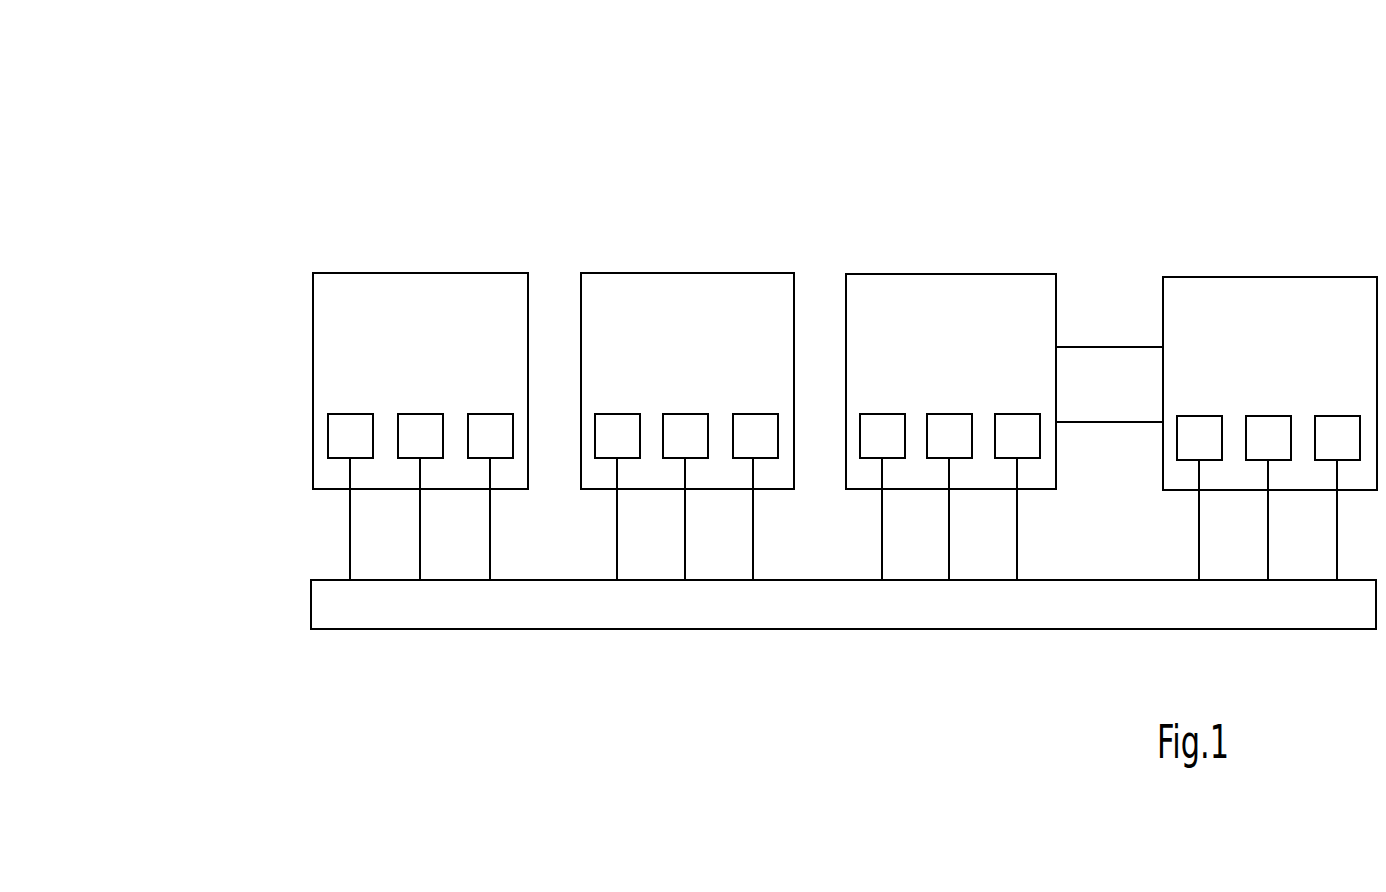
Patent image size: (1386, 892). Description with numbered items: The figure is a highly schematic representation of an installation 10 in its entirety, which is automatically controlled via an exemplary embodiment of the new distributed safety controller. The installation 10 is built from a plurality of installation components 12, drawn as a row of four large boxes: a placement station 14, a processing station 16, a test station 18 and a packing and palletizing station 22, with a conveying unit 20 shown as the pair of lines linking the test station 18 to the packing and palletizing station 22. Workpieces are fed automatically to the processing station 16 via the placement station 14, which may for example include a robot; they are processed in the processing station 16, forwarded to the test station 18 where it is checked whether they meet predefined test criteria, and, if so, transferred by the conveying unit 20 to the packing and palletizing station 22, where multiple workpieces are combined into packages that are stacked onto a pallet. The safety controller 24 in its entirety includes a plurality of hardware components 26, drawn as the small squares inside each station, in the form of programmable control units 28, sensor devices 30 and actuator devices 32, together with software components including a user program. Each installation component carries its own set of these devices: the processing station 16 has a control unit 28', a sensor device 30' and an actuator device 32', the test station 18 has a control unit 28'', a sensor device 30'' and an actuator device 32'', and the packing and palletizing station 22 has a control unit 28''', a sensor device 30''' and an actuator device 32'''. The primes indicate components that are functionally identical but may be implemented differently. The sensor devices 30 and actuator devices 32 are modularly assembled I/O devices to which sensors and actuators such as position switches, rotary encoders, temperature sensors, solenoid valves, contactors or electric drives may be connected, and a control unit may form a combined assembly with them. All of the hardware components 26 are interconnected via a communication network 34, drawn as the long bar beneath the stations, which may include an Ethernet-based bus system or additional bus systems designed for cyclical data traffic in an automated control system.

The installation 10 is at (361, 155).
The installation components 12 is at (912, 147).
The placement station 14 is at (413, 275).
The processing station 16 is at (688, 273).
The test station 18 is at (933, 275).
The conveying unit 20 is at (1110, 345).
The packing and palletizing station 22 is at (1248, 277).
The safety controller 24 is at (602, 682).
The hardware components 26 is at (288, 450).
The programmable control unit 28 is at (323, 502).
The sensor device 30 is at (405, 499).
The actuator device 32 is at (476, 497).
The programmable control unit 28' is at (587, 497).
The sensor device 30' is at (670, 497).
The actuator device 32' is at (739, 497).
The programmable control unit 28'' is at (855, 497).
The sensor device 30'' is at (937, 497).
The actuator device 32'' is at (1005, 497).
The programmable control unit 28''' is at (1172, 501).
The sensor device 30''' is at (1252, 498).
The actuator device 32''' is at (1324, 498).
The communication network 34 is at (937, 630).